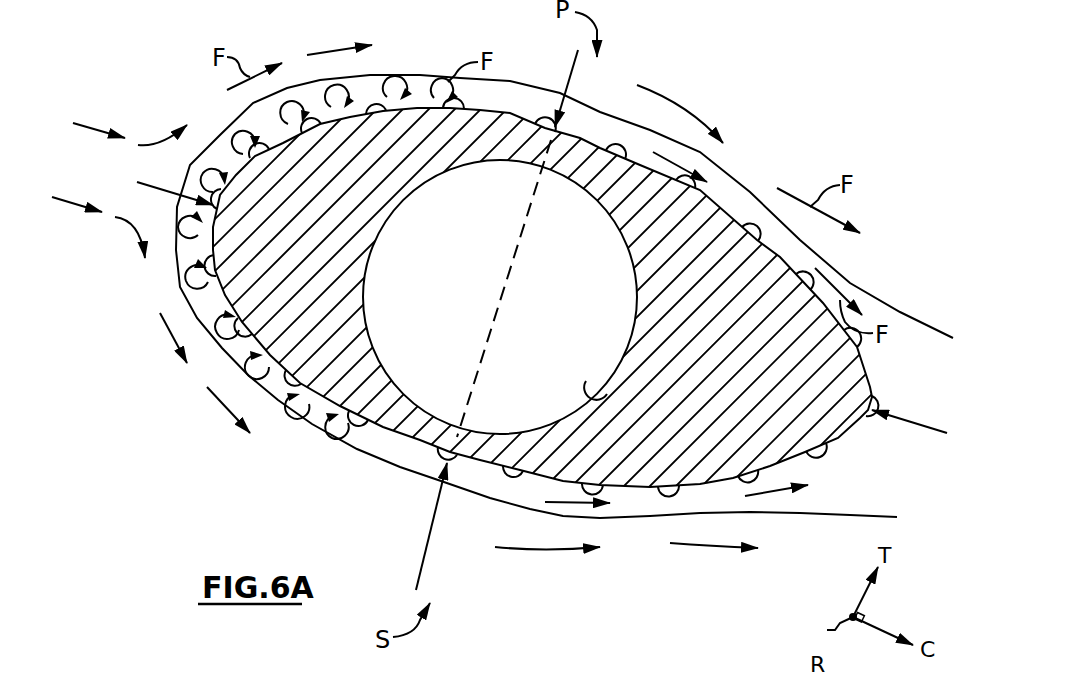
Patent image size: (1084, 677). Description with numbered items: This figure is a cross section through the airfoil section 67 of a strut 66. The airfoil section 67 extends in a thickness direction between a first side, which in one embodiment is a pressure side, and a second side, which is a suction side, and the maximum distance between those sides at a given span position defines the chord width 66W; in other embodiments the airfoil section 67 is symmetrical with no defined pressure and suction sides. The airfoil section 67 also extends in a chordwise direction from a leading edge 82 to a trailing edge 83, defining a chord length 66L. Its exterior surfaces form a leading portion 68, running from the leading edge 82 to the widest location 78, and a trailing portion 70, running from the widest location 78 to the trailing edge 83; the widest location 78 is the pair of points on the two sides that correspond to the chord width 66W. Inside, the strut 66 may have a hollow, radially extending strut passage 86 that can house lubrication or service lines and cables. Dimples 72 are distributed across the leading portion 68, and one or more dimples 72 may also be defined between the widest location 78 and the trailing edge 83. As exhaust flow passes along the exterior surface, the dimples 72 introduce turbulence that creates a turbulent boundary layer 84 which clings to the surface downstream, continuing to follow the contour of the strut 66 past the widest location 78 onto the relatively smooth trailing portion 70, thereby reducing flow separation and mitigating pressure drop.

The strut 66 is at (185, 480).
The chord length 66L is at (902, 422).
The chord width 66W is at (427, 547).
The airfoil section 67 is at (790, 262).
The leading portion 68 is at (187, 267).
The trailing portion 70 is at (836, 445).
The dimples 72 is at (442, 124).
The widest location 78 is at (497, 320).
The leading edge 82 is at (215, 197).
The trailing edge 83 is at (868, 410).
The turbulent boundary layer 84 is at (317, 440).
The strut passage 86 is at (590, 392).